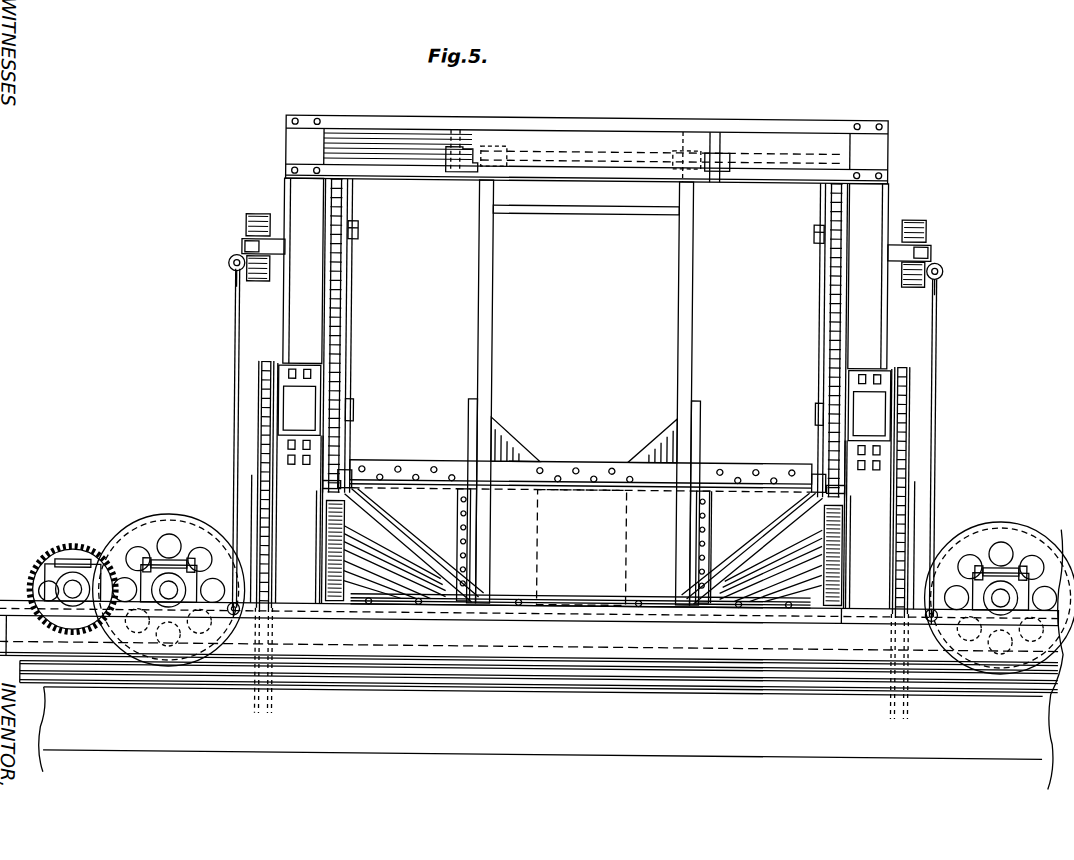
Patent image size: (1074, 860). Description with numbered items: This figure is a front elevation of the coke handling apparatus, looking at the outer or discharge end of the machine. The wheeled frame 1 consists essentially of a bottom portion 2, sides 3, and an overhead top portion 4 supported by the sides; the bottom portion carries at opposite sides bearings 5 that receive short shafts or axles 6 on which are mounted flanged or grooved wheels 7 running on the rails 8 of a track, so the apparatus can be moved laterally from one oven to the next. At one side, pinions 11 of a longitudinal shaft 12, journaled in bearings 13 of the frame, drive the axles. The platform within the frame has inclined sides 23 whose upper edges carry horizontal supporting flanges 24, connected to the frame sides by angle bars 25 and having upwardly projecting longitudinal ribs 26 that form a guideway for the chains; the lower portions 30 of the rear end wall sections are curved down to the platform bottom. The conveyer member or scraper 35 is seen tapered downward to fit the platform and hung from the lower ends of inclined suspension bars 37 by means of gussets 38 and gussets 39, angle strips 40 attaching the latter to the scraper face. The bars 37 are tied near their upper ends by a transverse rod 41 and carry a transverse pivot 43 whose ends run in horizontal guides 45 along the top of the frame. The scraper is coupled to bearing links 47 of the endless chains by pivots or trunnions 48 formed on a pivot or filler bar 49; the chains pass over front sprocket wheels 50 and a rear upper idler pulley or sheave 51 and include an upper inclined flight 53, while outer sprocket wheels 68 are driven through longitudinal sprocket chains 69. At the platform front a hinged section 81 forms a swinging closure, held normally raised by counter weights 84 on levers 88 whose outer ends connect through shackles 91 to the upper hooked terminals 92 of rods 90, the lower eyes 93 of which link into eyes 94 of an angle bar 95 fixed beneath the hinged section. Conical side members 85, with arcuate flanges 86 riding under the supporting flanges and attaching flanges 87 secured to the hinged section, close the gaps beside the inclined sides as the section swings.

The wheeled frame 1 is at (582, 457).
The bottom portion 2 is at (532, 654).
The sides 3 is at (282, 329).
The overhead top portion 4 is at (438, 118).
The bearings 5 is at (162, 577).
The shafts or axles 6 is at (170, 577).
The flanged or grooved wheels 7 is at (187, 515).
The rails 8 is at (758, 688).
The pinions 11 is at (74, 551).
The longitudinal shaft 12 is at (81, 582).
The bearings 13 is at (36, 579).
The inclined sides 23 is at (744, 548).
The supporting flanges 24 is at (317, 508).
The angle bars 25 is at (566, 521).
The longitudinal ribs 26 is at (373, 501).
The lower portions 30 is at (627, 543).
The conveyer member or scraper 35 is at (581, 584).
The suspension bars 37 is at (491, 319).
The gussets 38 is at (510, 451).
The gussets 39 is at (468, 426).
The angle strips 40 is at (458, 523).
The transverse rod 41 is at (578, 214).
The transverse pivot 43 is at (598, 161).
The horizontal guides 45 is at (462, 150).
The bearing links 47 is at (323, 488).
The pivots or trunnions 48 is at (347, 472).
The pivot or filler bar 49 is at (430, 462).
The front sprocket wheels 50 is at (320, 402).
The rear upper idler pulley or sheave 51 is at (352, 259).
The upper inclined flight 53 is at (350, 292).
The outer sprocket wheels 68 is at (258, 378).
The longitudinal sprocket chains 69 is at (252, 483).
The hinged section 81 is at (653, 606).
The counter weights 84 is at (257, 217).
The conical side members 85 is at (583, 564).
The arcuate flanges 86 is at (334, 577).
The attaching flanges 87 is at (398, 606).
The levers 88 is at (246, 247).
The rods 90 is at (234, 337).
The shackles 91 is at (227, 266).
The upper hooked terminals 92 is at (231, 279).
The eyes 93 is at (230, 618).
The eyes 94 is at (242, 620).
The angle bar 95 is at (853, 616).